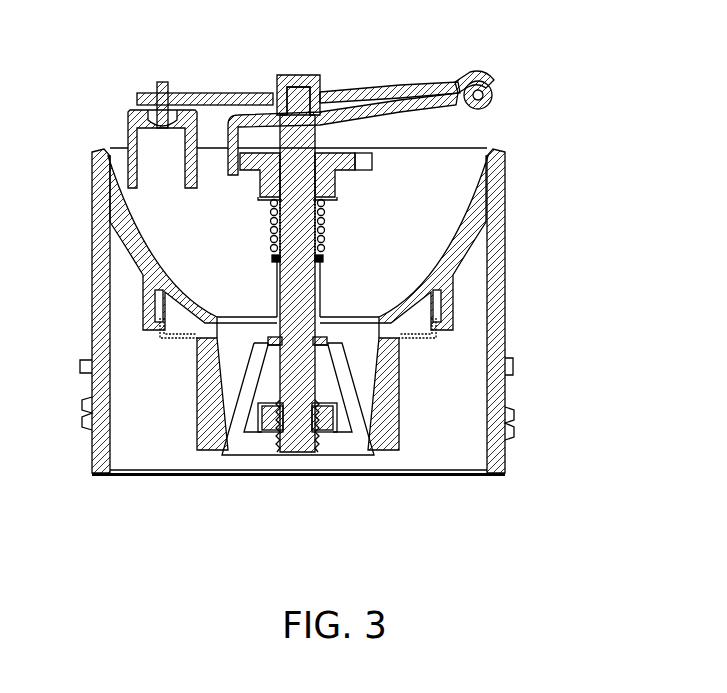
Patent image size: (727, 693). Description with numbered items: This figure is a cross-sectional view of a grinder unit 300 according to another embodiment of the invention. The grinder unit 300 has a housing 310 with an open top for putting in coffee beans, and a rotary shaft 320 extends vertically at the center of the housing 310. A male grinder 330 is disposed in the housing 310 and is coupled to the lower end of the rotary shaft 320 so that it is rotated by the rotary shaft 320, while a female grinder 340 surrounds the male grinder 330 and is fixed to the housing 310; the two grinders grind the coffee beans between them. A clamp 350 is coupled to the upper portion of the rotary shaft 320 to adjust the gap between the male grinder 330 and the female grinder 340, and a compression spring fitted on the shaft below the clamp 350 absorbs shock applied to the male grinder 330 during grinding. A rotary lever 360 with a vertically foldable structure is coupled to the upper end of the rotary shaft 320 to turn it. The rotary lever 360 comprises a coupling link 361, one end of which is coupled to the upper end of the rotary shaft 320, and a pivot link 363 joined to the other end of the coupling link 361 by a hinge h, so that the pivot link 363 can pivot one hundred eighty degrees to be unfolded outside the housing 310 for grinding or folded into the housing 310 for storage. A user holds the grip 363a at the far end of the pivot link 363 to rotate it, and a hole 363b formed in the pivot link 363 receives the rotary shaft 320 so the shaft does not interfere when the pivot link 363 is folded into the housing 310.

The grinder unit 300 is at (552, 295).
The housing 310 is at (503, 213).
The rotary shaft 320 is at (303, 297).
The male grinder 330 is at (234, 453).
The female grinder 340 is at (392, 417).
The clamp 350 is at (333, 190).
The rotary lever 360 is at (262, 64).
The coupling link 361 is at (432, 116).
The pivot link 363 is at (413, 86).
The grip 363a is at (129, 114).
The hole 363b is at (322, 90).
The hinge h is at (492, 95).